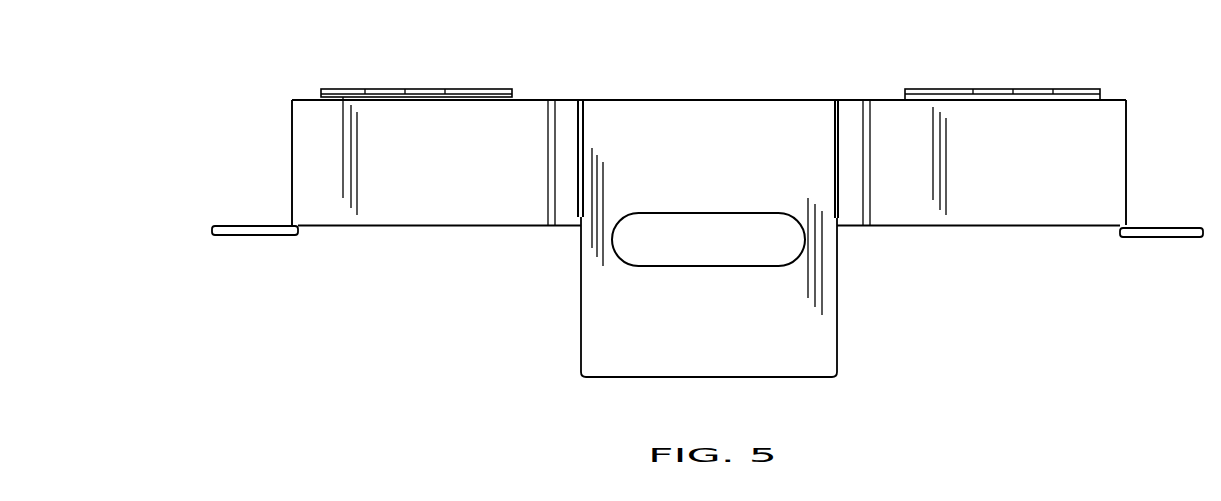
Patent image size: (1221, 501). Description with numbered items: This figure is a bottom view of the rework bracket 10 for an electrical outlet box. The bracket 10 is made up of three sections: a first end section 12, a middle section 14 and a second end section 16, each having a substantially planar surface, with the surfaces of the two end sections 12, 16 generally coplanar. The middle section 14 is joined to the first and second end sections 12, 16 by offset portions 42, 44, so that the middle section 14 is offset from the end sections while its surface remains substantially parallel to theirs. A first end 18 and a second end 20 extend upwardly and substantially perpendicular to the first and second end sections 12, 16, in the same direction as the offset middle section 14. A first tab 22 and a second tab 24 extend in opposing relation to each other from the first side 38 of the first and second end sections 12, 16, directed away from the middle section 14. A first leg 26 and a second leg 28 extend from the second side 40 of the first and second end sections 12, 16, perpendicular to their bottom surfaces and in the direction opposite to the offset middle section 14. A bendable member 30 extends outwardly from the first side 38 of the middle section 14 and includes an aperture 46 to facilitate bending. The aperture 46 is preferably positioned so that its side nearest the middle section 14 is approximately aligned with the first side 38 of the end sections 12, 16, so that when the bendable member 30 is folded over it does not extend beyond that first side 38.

The bracket 10 is at (945, 365).
The first end section 12 is at (1028, 198).
The middle section 14 is at (705, 118).
The second end section 16 is at (397, 170).
The first end 18 is at (1132, 154).
The second end 20 is at (290, 148).
The first tab 22 is at (1180, 238).
The second tab 24 is at (257, 237).
The first leg 26 is at (1035, 87).
The second leg 28 is at (475, 85).
The bendable member 30 is at (688, 332).
The first side 38 is at (467, 222).
The second side 40 is at (813, 98).
The offset portion 42 is at (853, 110).
The offset portion 44 is at (566, 120).
The aperture 46 is at (788, 242).